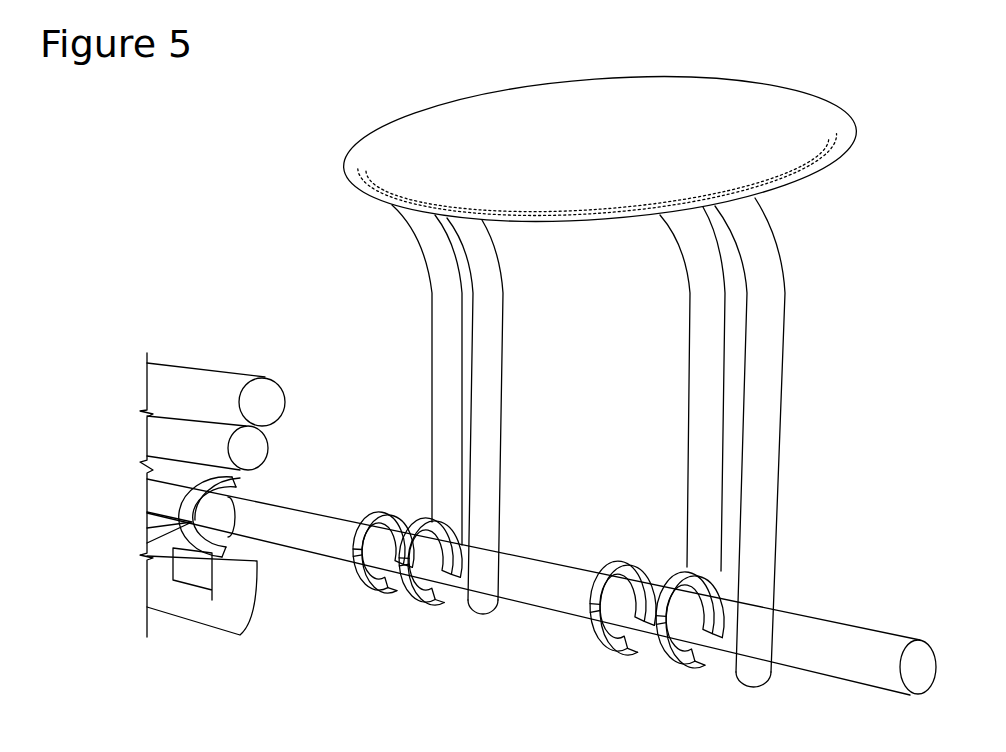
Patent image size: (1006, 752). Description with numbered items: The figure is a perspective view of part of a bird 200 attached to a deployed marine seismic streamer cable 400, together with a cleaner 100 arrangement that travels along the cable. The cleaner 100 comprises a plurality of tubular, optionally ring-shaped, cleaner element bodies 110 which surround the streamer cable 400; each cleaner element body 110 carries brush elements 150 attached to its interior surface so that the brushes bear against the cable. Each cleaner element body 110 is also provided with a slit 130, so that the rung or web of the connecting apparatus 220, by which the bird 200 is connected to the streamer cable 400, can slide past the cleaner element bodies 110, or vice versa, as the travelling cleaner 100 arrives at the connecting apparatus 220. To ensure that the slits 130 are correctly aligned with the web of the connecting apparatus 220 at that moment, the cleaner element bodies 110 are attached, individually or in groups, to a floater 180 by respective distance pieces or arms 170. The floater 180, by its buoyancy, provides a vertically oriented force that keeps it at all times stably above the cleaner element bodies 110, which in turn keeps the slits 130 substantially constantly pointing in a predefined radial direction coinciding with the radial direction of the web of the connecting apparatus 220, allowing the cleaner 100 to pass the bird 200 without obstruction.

The cleaner 100 is at (413, 518).
The cleaner element body 110 is at (683, 570).
The slit 130 is at (402, 592).
The brush element 150 is at (427, 555).
The arm 170 is at (492, 318).
The floater 180 is at (517, 118).
The bird 200 is at (205, 330).
The connecting apparatus 220 is at (227, 550).
The marine seismic streamer cable 400 is at (867, 647).